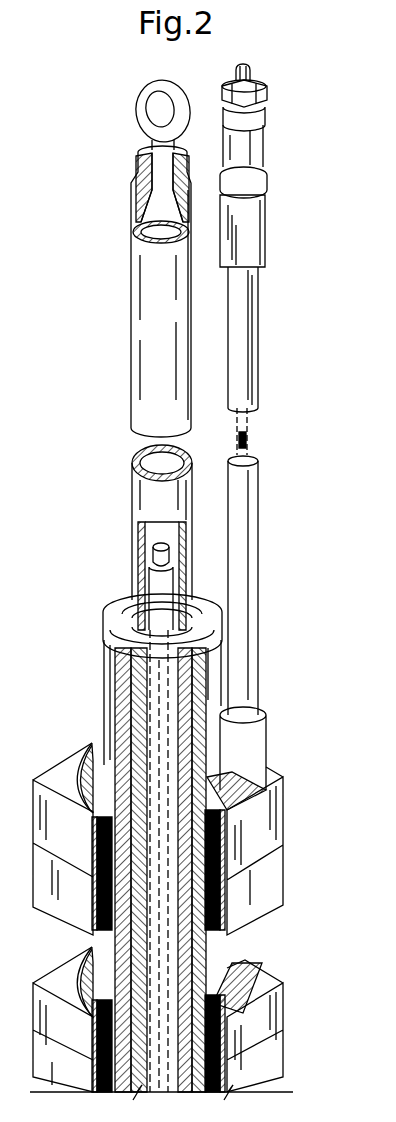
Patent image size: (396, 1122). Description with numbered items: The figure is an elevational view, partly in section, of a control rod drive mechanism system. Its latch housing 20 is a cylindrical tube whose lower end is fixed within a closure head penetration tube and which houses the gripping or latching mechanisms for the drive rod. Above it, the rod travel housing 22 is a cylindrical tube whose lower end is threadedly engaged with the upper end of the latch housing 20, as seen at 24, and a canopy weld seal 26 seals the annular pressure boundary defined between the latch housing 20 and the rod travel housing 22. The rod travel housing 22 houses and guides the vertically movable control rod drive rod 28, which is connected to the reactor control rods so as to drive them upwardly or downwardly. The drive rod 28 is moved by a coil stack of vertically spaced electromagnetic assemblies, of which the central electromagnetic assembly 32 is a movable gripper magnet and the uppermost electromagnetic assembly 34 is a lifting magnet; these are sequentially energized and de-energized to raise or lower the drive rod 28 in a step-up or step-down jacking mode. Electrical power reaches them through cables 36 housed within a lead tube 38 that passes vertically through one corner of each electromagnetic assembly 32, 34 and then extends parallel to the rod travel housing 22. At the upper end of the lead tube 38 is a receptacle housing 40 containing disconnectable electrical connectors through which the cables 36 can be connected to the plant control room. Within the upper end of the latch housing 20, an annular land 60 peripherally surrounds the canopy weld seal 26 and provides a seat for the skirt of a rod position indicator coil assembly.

The latch housing 20 is at (210, 690).
The rod travel housing 22 is at (135, 358).
The threaded engagement 24 is at (193, 672).
The canopy weld seal 26 is at (110, 627).
The control rod drive rod 28 is at (158, 693).
The central electromagnetic assembly 32 is at (275, 1008).
The uppermost electromagnetic assembly 34 is at (277, 805).
The cables 36 is at (247, 438).
The CRDM lead tube 38 is at (250, 531).
The receptacle housing 40 is at (257, 244).
The annular land 60 is at (122, 650).